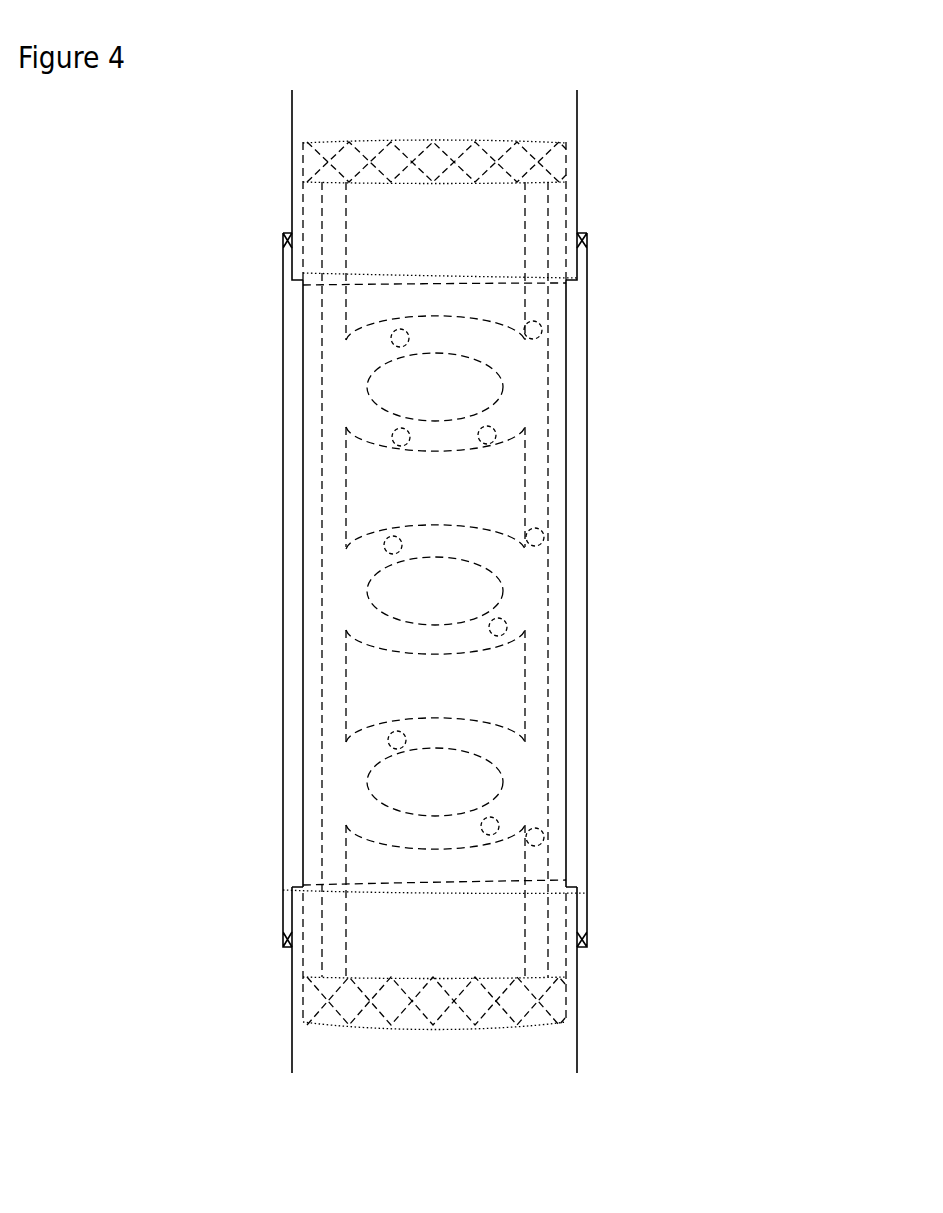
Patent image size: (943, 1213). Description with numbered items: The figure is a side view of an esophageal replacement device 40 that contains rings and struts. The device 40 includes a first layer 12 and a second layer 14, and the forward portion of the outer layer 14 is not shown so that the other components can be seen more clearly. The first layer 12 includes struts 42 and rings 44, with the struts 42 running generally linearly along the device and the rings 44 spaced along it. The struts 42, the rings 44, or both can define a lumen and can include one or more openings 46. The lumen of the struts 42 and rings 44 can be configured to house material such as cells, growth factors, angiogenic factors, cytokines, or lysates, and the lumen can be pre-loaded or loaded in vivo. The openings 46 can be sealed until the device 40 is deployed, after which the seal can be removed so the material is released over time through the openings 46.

The device 40 is at (728, 57).
The first layer 12 is at (567, 442).
The second layer 14 is at (587, 481).
The struts 42 is at (335, 479).
The rings 44 is at (447, 322).
The openings 46 is at (536, 333).